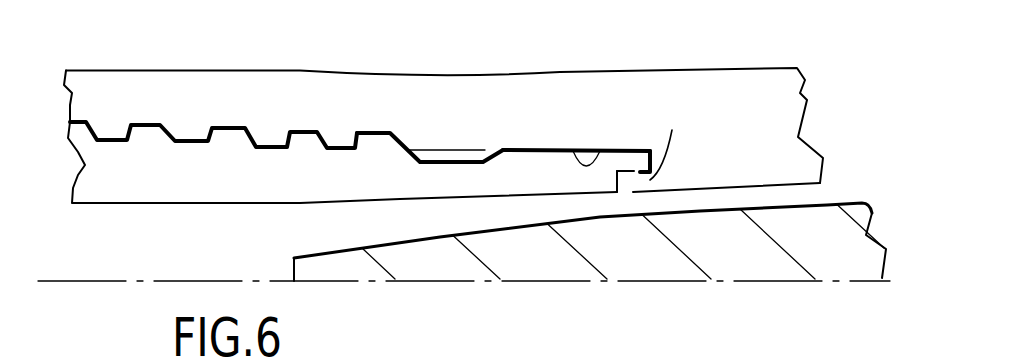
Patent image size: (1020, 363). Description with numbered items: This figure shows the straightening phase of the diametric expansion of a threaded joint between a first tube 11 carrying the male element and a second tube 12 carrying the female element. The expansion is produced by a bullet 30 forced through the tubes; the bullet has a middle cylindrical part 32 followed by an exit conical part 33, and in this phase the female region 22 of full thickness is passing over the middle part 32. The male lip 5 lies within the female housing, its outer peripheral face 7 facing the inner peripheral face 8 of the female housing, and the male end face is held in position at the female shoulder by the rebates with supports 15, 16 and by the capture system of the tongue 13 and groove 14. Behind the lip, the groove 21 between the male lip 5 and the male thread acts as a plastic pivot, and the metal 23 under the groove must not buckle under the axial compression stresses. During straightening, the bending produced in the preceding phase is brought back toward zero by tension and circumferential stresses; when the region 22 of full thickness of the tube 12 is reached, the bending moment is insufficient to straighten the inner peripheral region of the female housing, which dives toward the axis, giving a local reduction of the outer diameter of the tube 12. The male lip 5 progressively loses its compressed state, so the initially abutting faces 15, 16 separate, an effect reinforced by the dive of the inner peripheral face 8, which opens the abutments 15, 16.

The male lip 5 is at (553, 173).
The outer peripheral face 7 is at (528, 152).
The inner peripheral face 8 is at (590, 163).
The first tube 11 is at (105, 177).
The second tube 12 is at (771, 117).
The tongue 13 is at (645, 165).
The groove 14 is at (672, 130).
The support face of rebate 15 is at (623, 173).
The support face of rebate 16 is at (631, 173).
The groove 21 is at (455, 160).
The region of full thickness 22 is at (722, 173).
The metal under the groove 23 is at (195, 173).
The bullet 30 is at (685, 247).
The middle cylindrical part 32 is at (827, 203).
The exit conical part 33 is at (408, 245).